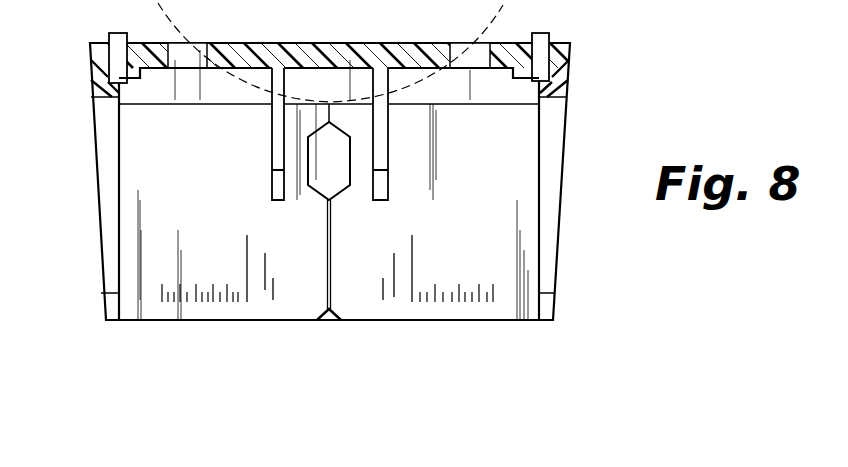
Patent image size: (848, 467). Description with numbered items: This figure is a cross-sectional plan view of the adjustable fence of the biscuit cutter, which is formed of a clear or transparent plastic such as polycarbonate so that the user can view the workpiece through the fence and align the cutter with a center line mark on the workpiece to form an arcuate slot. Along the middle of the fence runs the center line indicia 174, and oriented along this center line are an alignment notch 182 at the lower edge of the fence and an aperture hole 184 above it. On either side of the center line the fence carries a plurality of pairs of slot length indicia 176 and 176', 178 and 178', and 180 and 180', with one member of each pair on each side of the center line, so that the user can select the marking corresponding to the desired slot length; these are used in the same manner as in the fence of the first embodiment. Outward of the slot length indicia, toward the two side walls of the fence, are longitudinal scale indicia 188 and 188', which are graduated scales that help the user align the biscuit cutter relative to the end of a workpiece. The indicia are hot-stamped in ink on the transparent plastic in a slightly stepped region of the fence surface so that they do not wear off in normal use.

The center line indicia 174 is at (327, 258).
The slot length indicia 176 is at (408, 334).
The slot length indicia 176' is at (187, 313).
The slot length indicia 178 is at (438, 322).
The slot length indicia 178' is at (222, 322).
The slot length indicia 180 is at (472, 313).
The slot length indicia 180' is at (255, 334).
The alignment notch 182 is at (334, 321).
The aperture hole 184 is at (336, 198).
The longitudinal scale indicia 188 is at (534, 277).
The longitudinal scale indicia 188' is at (129, 276).